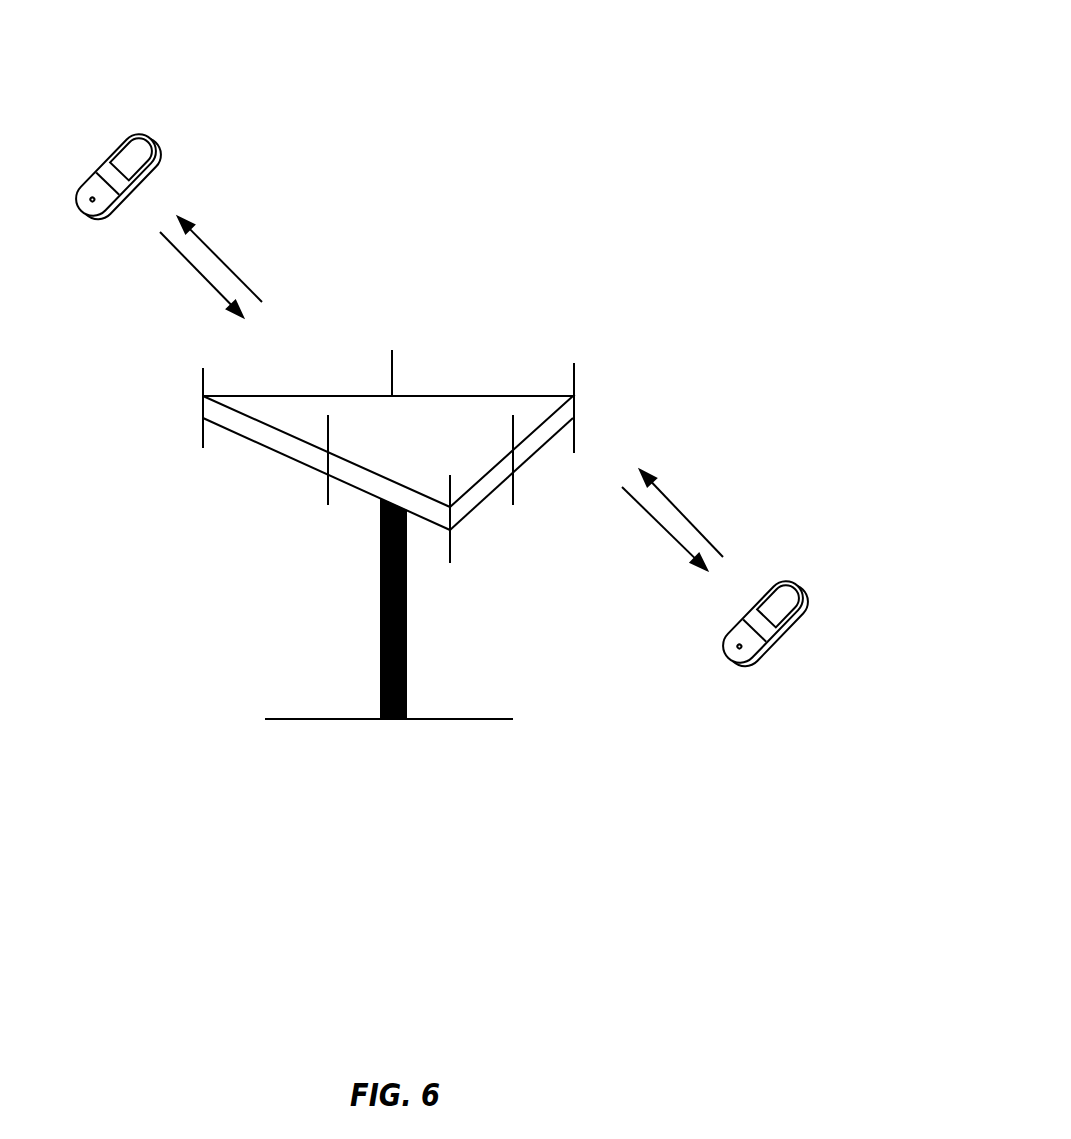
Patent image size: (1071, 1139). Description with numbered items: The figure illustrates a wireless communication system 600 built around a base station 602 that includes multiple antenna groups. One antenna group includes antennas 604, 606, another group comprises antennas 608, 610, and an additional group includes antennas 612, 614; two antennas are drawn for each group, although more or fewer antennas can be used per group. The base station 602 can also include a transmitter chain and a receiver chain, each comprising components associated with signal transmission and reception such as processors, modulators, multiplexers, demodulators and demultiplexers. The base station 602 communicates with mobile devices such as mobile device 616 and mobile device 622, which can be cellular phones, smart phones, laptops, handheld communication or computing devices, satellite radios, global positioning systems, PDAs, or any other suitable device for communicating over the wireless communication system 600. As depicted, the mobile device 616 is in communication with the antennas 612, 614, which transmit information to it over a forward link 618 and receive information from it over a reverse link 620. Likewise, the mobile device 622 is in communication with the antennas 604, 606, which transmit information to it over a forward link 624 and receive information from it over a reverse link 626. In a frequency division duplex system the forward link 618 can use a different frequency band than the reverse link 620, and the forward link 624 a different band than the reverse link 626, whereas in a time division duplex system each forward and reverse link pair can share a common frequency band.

The wireless communication system 600 is at (638, 42).
The base station 602 is at (403, 720).
The antenna 604 is at (574, 363).
The antenna 606 is at (513, 484).
The antenna 608 is at (450, 543).
The antenna 610 is at (328, 505).
The antenna 612 is at (203, 368).
The antenna 614 is at (392, 367).
The mobile device 616 is at (128, 132).
The forward link 618 is at (222, 260).
The reverse link 620 is at (213, 288).
The mobile device 622 is at (775, 578).
The forward link 624 is at (668, 538).
The reverse link 626 is at (677, 505).